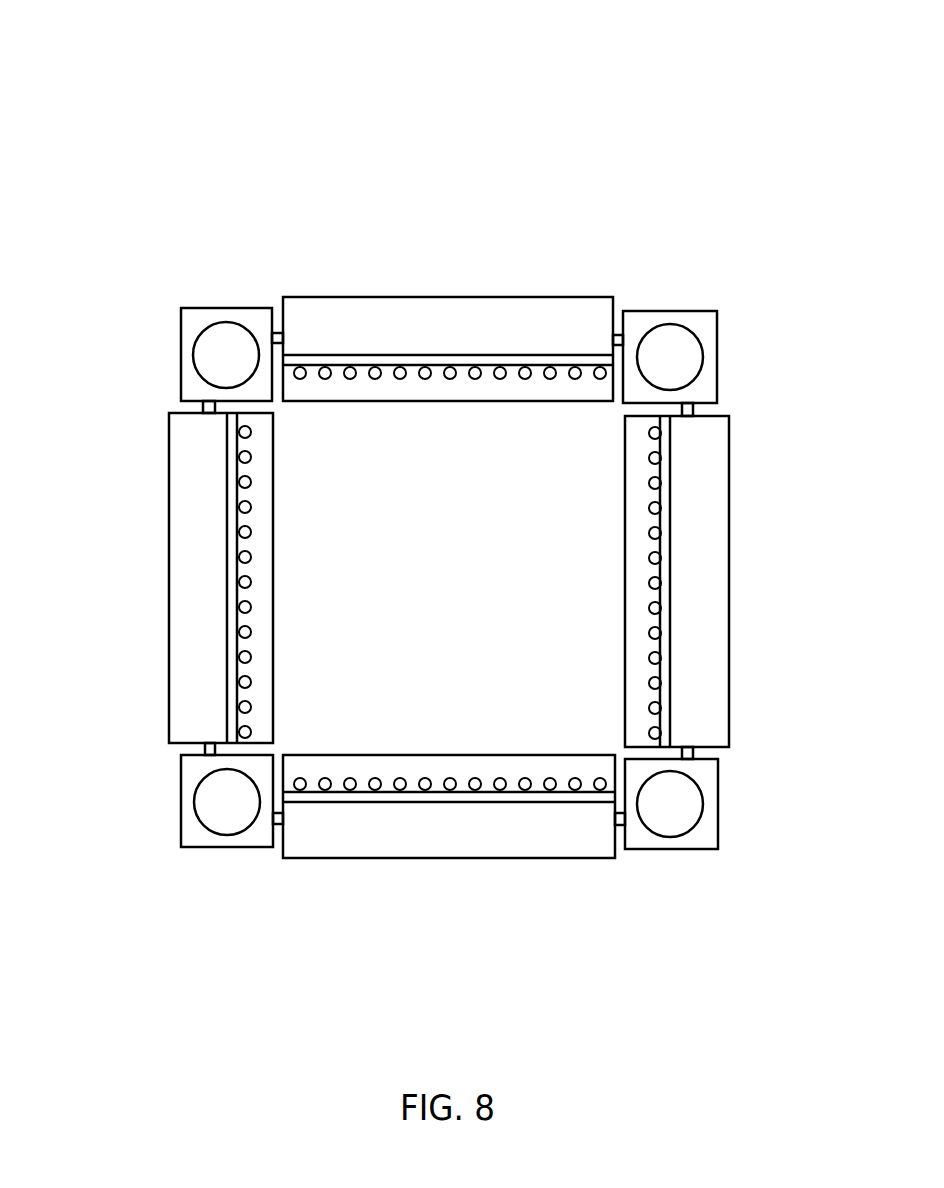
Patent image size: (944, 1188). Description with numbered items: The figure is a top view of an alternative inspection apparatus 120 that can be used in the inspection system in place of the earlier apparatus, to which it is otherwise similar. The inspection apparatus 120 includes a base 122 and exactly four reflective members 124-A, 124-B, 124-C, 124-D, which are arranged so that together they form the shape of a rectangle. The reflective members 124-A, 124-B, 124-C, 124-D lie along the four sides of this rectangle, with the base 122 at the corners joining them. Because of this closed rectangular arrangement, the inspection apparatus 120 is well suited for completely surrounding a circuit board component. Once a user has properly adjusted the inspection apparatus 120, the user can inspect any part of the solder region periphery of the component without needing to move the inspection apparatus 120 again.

The inspection apparatus 120 is at (752, 99).
The base 122 is at (718, 312).
The reflective member 124-A is at (449, 290).
The reflective member 124-B is at (735, 567).
The reflective member 124-C is at (442, 866).
The reflective member 124-D is at (164, 558).